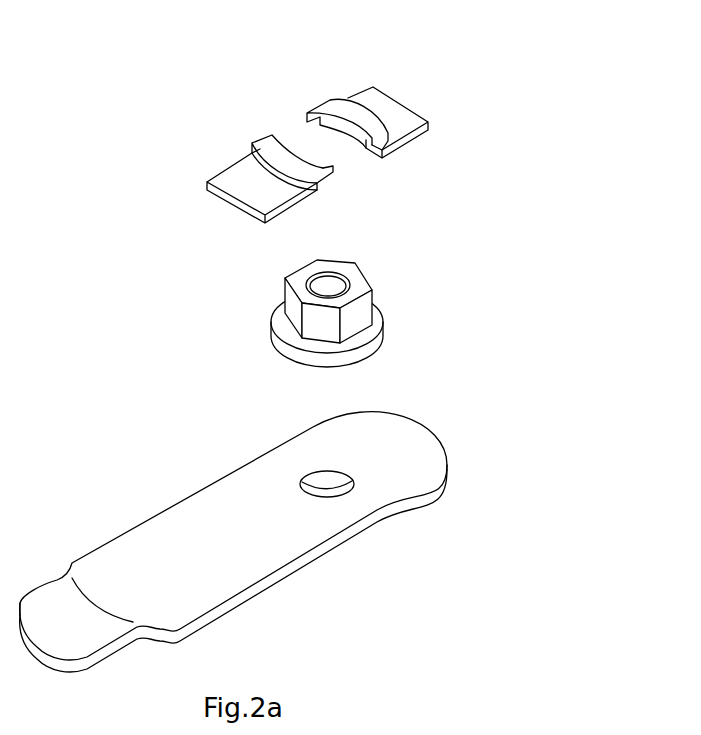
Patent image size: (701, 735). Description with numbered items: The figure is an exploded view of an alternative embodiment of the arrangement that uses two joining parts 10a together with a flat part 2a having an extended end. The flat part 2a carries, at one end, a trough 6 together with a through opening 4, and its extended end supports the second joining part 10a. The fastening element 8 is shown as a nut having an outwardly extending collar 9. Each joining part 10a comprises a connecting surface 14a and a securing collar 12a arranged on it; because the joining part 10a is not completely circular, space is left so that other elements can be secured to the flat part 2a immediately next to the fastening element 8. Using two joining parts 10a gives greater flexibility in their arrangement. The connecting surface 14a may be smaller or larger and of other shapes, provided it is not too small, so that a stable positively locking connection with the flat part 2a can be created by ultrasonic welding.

The flat part 2a is at (172, 490).
The through opening 4 is at (325, 488).
The trough 6 is at (50, 600).
The fastening element 8 is at (362, 287).
The collar 9 is at (372, 350).
The joining part 10a is at (438, 103).
The securing collar 12a is at (257, 140).
The connecting surface 14a is at (227, 180).